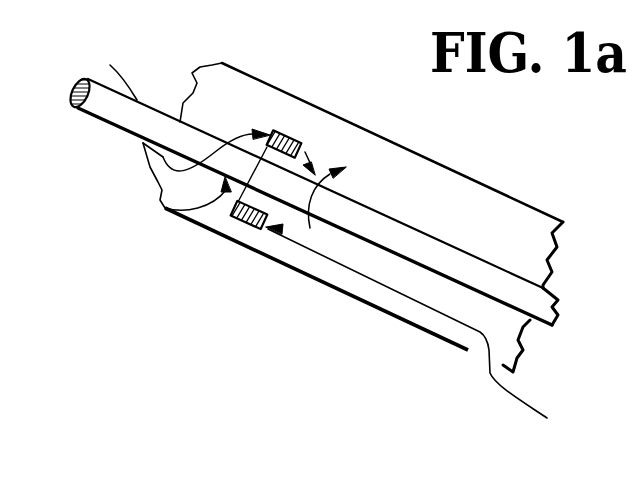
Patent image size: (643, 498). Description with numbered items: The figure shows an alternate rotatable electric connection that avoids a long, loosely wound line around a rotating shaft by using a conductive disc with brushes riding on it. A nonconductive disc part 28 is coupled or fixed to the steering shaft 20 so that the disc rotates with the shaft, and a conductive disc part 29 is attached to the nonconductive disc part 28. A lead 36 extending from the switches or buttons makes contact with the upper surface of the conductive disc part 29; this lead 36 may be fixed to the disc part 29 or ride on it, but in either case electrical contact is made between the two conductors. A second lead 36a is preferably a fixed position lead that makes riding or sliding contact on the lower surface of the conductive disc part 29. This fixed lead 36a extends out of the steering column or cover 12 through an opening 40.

The steering column or cover 12 is at (507, 193).
The steering shaft 20 is at (347, 203).
The nonconductive disc part 28 is at (165, 208).
The conductive disc part 29 is at (292, 134).
The lead 36 is at (133, 72).
The fixed position lead 36a is at (353, 275).
The opening 40 is at (479, 355).